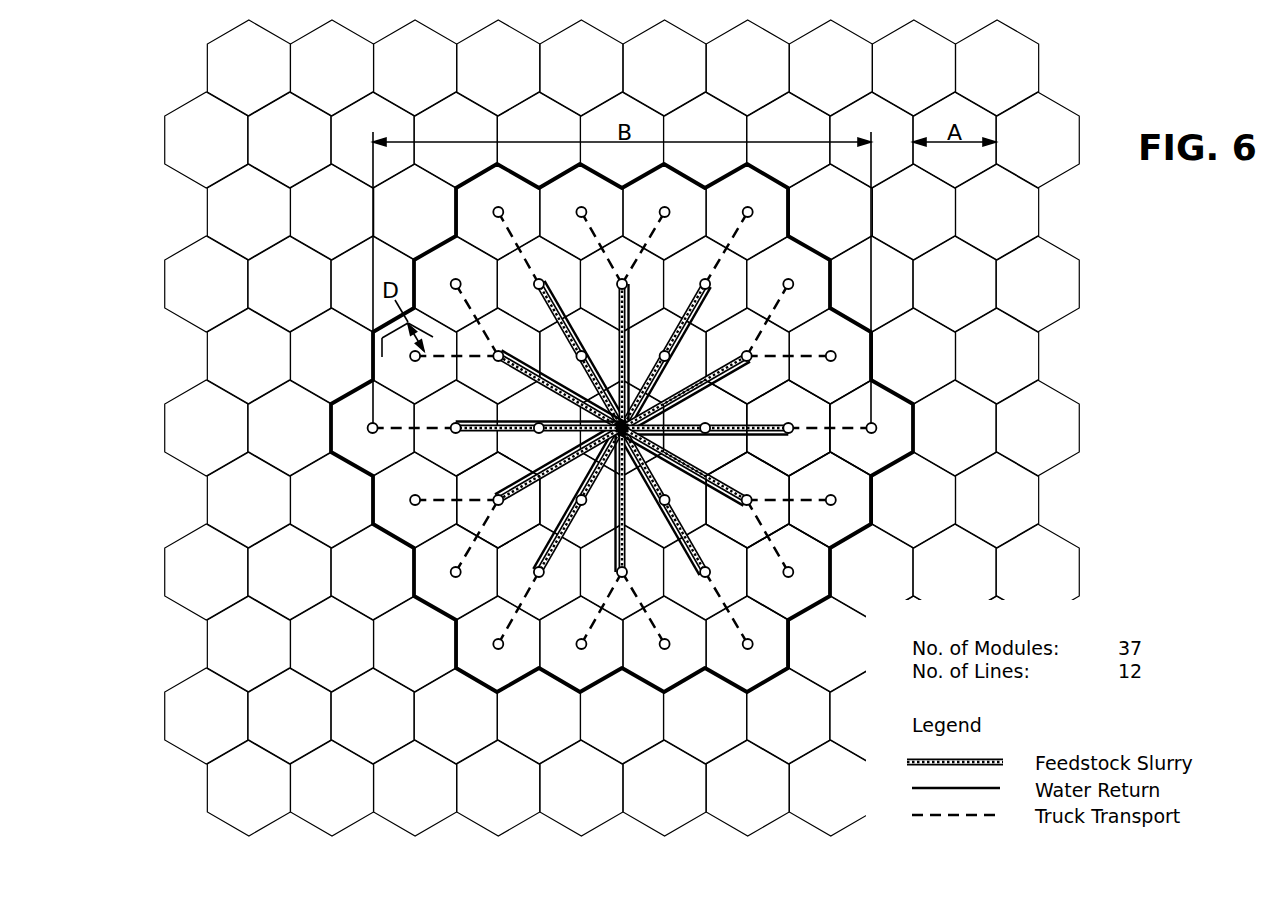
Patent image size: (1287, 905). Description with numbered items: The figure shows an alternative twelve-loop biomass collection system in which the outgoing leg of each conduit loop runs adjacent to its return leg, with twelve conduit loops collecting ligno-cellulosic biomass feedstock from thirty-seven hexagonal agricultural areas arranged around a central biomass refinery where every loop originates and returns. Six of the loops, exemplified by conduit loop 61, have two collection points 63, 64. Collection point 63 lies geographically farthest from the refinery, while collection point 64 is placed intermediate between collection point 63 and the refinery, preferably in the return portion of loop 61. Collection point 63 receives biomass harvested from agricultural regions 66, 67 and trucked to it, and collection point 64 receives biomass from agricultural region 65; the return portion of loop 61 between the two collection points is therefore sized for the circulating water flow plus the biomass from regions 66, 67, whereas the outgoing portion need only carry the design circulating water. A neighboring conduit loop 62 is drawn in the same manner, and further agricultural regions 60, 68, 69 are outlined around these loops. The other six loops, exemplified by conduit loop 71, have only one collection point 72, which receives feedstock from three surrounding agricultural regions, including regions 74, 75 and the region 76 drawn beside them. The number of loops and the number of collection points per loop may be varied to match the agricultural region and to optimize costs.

The outer ring module 60 is at (805, 609).
The conduit loop 61 is at (734, 437).
The water return line 62 is at (692, 478).
The collection point 63 is at (790, 437).
The collection point 64 is at (707, 421).
The agricultural region 65 is at (720, 462).
The agricultural region 66 is at (802, 419).
The agricultural region 67 is at (907, 439).
The module 68 is at (756, 529).
The module 69 is at (844, 529).
The conduit loop 71 is at (483, 422).
The collection point 72 is at (495, 505).
The agricultural region 74 is at (410, 501).
The agricultural region 75 is at (452, 577).
The hexagonal module area 76 is at (507, 527).